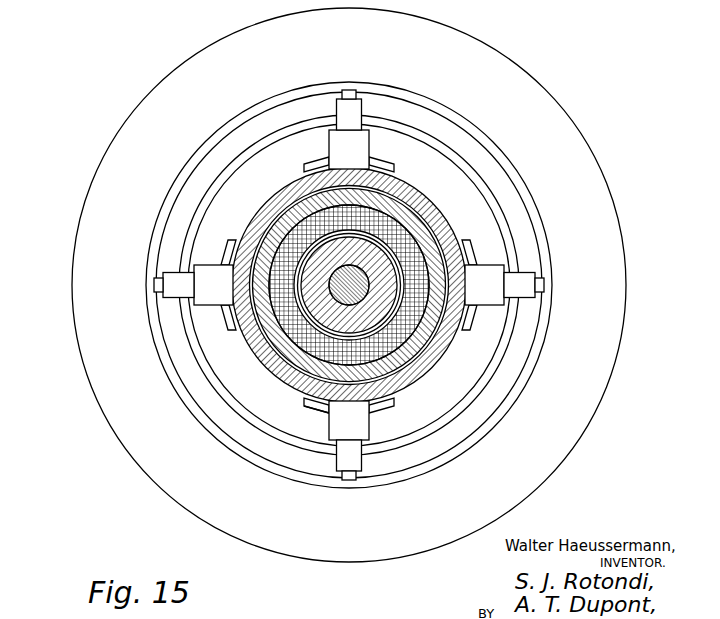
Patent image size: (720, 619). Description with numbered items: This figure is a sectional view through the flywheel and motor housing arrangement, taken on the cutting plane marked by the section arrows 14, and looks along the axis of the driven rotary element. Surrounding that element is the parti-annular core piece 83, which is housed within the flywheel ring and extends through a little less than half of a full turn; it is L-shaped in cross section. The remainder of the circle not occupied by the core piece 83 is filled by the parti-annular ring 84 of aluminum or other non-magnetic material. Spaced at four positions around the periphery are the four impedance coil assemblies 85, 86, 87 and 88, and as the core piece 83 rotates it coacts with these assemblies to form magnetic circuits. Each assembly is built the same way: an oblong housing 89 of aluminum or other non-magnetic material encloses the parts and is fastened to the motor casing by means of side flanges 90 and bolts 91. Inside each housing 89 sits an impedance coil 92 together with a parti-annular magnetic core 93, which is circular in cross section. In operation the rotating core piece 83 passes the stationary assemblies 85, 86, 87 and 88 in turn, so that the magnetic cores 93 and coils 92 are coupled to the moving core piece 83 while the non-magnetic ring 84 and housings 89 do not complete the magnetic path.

The section line 14- 14 is at (162, 283).
The parti-annular core piece 83 is at (486, 147).
The parti-annular ring 84 is at (349, 285).
The impedance coil assembly 85 is at (214, 252).
The impedance coil assembly 86 is at (326, 141).
The impedance coil assembly 87 is at (486, 318).
The impedance coil assembly 88 is at (379, 428).
The oblong housing 89 is at (366, 140).
The side flanges 90 is at (307, 401).
The bolts 91 is at (317, 413).
The impedance coil 92 is at (362, 104).
The parti-annular magnetic core 93 is at (163, 287).